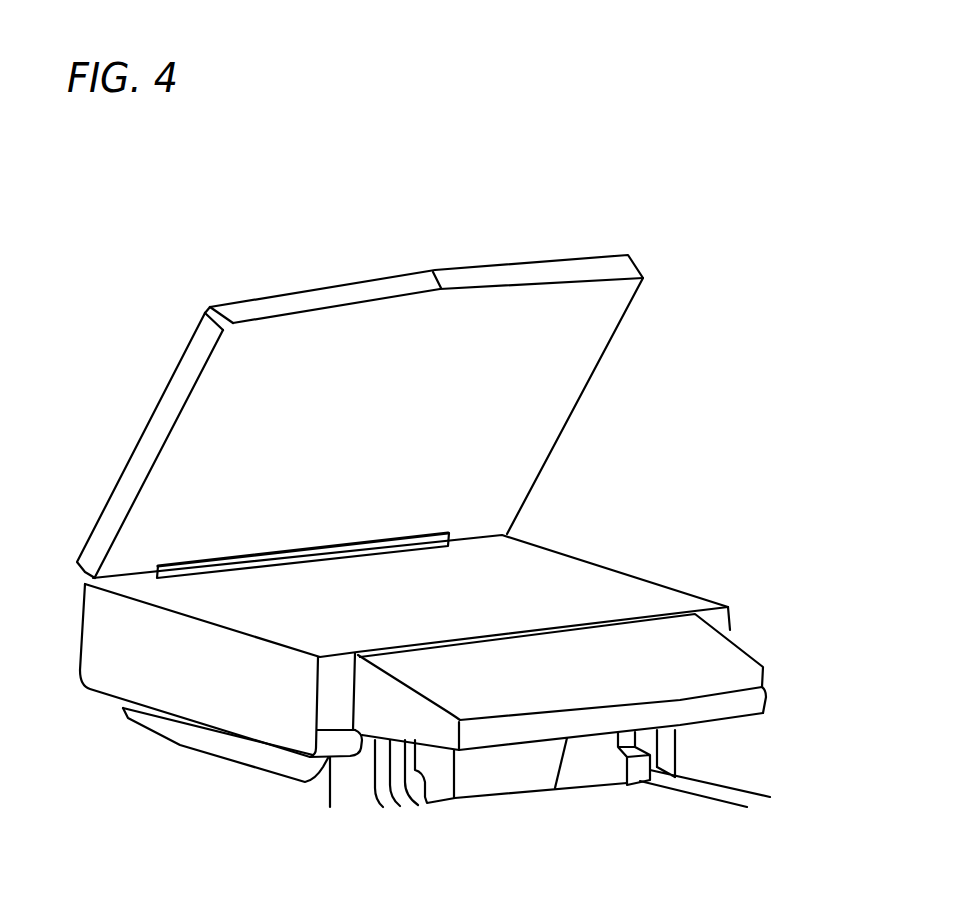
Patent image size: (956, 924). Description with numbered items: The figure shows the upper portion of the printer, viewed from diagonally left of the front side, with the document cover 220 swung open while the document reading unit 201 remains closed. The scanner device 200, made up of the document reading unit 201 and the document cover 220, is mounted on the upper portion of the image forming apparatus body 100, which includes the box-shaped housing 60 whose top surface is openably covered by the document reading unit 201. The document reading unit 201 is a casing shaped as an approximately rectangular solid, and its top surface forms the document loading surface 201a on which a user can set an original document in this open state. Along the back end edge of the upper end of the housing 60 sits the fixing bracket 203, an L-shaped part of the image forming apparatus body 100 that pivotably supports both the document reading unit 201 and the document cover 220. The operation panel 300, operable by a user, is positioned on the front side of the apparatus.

The scanner device 200 is at (332, 390).
The document cover 220 is at (350, 284).
The fixing bracket 203 is at (442, 528).
The document reading unit 201 is at (377, 603).
The document loading surface 201a is at (580, 580).
The operation panel 300 is at (735, 642).
The image forming apparatus body 100 is at (745, 788).
The housing 60 is at (330, 790).